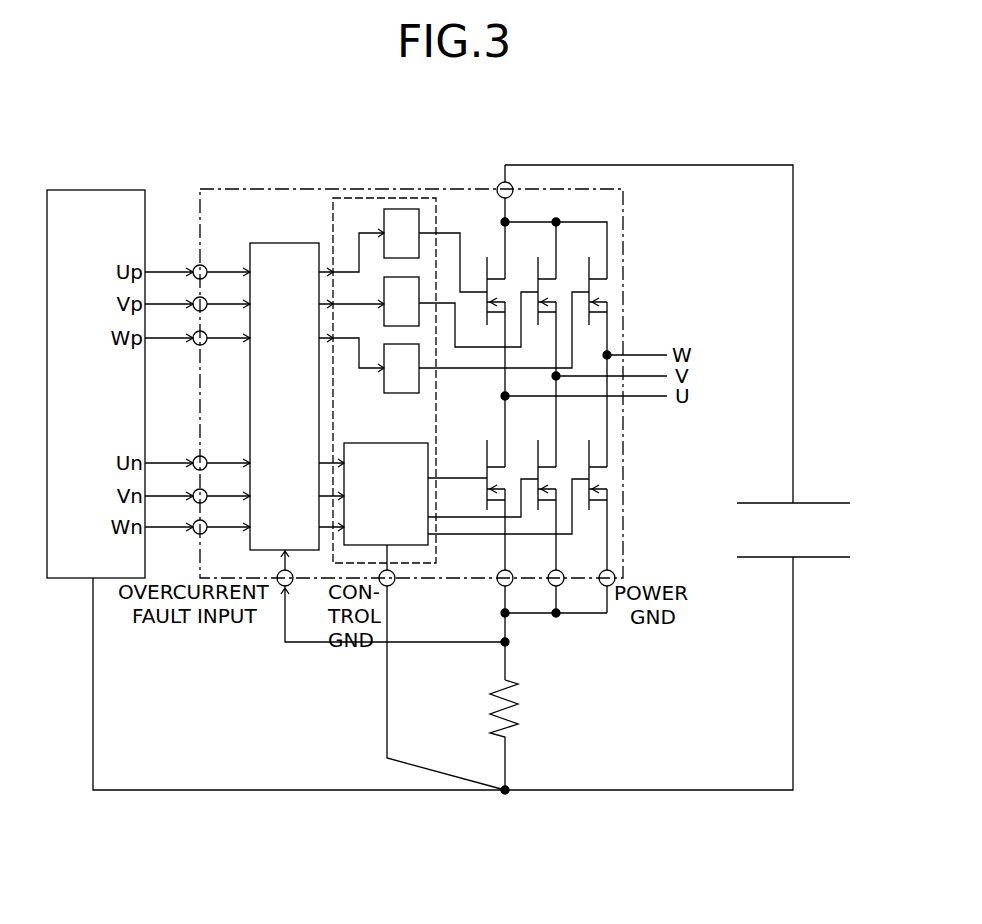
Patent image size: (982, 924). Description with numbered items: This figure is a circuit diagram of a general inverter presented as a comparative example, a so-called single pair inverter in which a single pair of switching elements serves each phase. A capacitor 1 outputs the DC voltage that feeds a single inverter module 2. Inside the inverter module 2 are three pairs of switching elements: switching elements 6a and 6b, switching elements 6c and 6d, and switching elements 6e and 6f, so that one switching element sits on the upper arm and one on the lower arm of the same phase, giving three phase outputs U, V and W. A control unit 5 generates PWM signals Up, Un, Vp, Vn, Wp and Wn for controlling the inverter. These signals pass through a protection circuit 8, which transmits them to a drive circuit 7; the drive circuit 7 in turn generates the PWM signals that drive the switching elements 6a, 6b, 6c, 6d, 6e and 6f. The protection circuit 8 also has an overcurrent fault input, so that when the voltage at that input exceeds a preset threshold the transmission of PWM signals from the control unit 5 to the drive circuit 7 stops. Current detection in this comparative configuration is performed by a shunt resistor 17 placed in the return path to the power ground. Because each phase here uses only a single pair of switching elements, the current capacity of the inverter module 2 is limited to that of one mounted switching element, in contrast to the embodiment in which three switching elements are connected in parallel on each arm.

The capacitor 1 is at (826, 500).
The inverter module 2 is at (280, 188).
The control unit 5 is at (60, 580).
The switching element 6a is at (488, 267).
The switching element 6b is at (488, 449).
The switching element 6c is at (539, 267).
The switching element 6d is at (539, 449).
The switching element 6e is at (590, 267).
The switching element 6f is at (590, 449).
The drive circuit 7 is at (363, 196).
The protection circuit 8 is at (273, 243).
The shunt resistor 17 is at (515, 698).